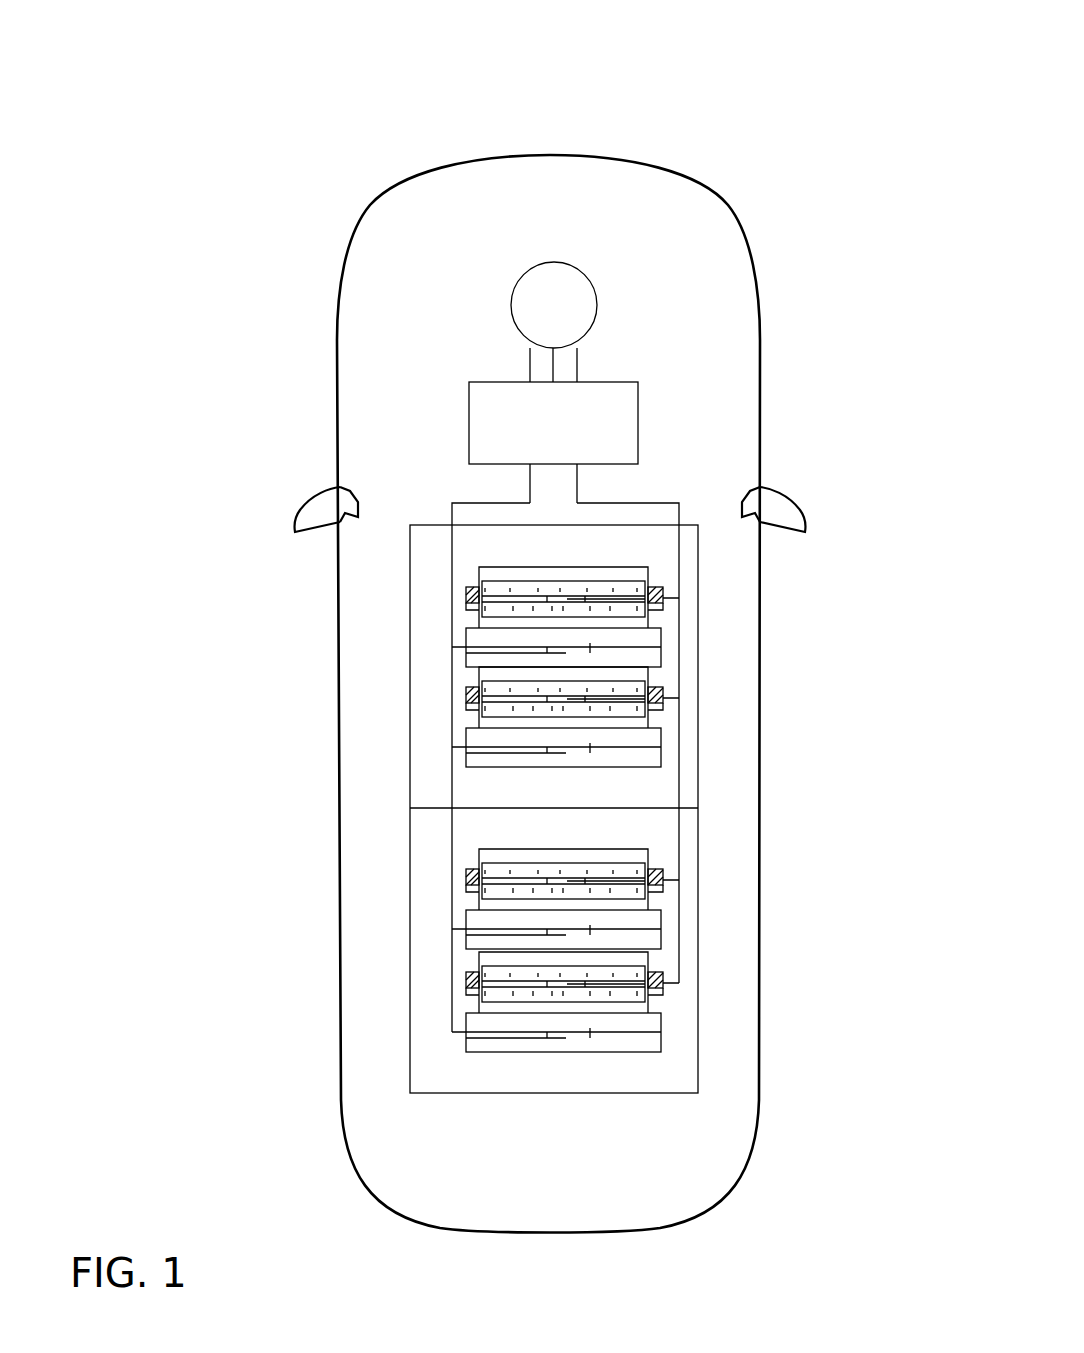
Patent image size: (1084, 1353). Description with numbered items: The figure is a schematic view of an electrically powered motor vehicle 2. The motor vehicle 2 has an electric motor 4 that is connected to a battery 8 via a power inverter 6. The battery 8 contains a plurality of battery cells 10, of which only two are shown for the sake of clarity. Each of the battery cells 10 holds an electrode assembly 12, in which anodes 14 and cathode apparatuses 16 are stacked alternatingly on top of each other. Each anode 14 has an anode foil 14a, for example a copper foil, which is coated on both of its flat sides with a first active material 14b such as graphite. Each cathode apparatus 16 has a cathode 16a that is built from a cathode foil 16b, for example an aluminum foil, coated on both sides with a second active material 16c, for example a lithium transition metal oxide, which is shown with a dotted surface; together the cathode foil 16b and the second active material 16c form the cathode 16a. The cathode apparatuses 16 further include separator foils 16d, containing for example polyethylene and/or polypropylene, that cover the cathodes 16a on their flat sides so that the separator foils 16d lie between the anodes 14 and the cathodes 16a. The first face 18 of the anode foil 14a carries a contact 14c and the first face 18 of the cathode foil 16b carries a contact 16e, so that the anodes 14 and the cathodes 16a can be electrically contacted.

The motor vehicle 2 is at (550, 140).
The electric motor 4 is at (595, 303).
The power inverter 6 is at (638, 423).
The battery 8 is at (695, 1045).
The battery cell 10 is at (687, 791).
The electrode assembly 12 is at (522, 890).
The anode 14 is at (692, 667).
The anode foil 14a is at (649, 648).
The first active material 14b is at (649, 636).
The contact 14c is at (581, 749).
The cathode apparatus 16 is at (395, 943).
The cathode 16a is at (497, 873).
The cathode foil 16b is at (514, 881).
The second active material 16c is at (497, 873).
The separator foil 16d is at (504, 857).
The contact 16e is at (557, 983).
The first face 18 is at (627, 760).